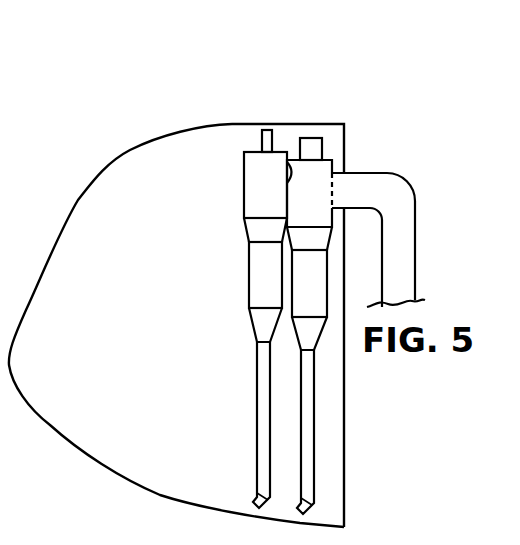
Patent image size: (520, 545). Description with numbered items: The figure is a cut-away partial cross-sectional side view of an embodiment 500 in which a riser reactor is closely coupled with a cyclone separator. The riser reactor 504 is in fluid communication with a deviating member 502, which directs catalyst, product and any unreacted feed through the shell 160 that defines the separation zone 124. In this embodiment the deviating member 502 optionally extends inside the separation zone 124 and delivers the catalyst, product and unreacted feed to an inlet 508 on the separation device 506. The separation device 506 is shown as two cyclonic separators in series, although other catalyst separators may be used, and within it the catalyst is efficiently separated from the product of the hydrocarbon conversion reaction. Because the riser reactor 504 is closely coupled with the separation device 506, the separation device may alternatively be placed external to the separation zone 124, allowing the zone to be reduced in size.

The embodiment of the invention 500 is at (402, 116).
The deviating member 502 is at (407, 183).
The riser reactor 504 is at (416, 267).
The separation device 506 is at (320, 335).
The inlet 508 is at (337, 200).
The separation zone 124 is at (149, 343).
The shell 160 is at (344, 473).